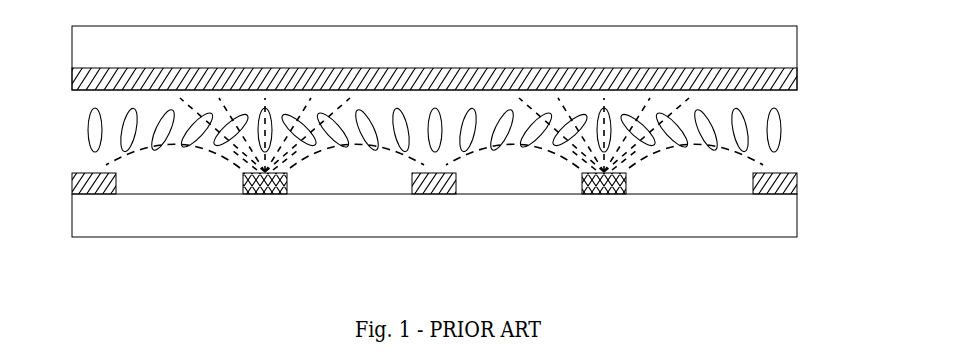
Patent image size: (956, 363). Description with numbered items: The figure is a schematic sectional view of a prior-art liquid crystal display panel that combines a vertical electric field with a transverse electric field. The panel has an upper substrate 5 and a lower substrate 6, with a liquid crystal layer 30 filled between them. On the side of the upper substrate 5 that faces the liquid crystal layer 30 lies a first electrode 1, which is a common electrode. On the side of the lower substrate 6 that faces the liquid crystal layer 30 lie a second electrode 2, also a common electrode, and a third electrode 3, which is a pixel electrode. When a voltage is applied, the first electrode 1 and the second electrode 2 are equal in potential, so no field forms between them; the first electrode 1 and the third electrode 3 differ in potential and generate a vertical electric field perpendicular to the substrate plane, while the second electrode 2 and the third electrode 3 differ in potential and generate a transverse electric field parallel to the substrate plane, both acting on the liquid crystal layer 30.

The first electrode 1 is at (797, 82).
The second electrode 2 is at (797, 184).
The third electrode 3 is at (600, 195).
The upper substrate 5 is at (425, 58).
The lower substrate 6 is at (425, 215).
The liquid crystal layer 30 is at (783, 130).